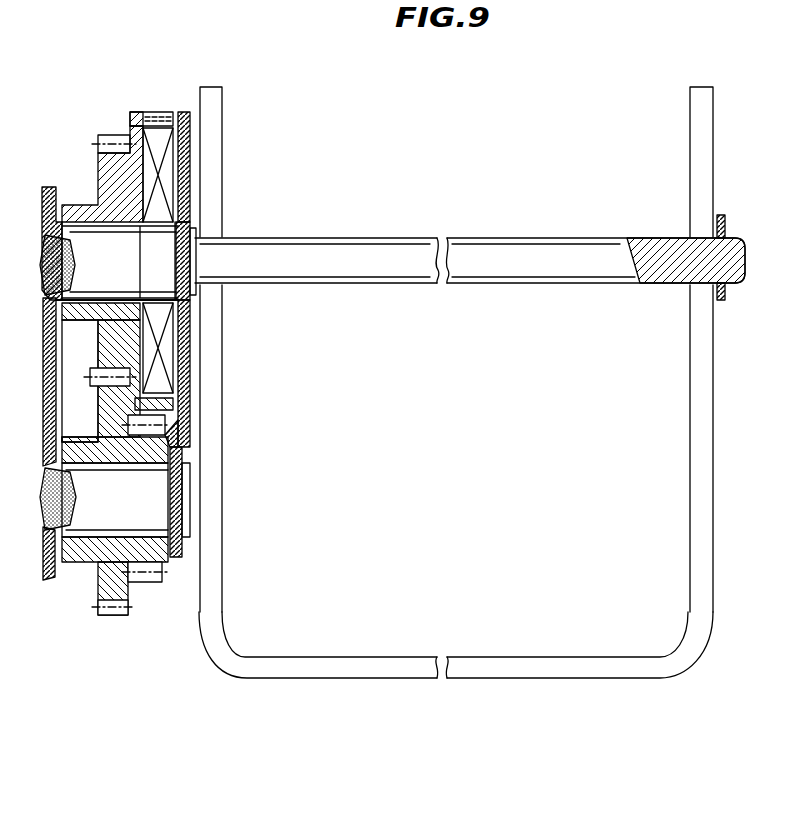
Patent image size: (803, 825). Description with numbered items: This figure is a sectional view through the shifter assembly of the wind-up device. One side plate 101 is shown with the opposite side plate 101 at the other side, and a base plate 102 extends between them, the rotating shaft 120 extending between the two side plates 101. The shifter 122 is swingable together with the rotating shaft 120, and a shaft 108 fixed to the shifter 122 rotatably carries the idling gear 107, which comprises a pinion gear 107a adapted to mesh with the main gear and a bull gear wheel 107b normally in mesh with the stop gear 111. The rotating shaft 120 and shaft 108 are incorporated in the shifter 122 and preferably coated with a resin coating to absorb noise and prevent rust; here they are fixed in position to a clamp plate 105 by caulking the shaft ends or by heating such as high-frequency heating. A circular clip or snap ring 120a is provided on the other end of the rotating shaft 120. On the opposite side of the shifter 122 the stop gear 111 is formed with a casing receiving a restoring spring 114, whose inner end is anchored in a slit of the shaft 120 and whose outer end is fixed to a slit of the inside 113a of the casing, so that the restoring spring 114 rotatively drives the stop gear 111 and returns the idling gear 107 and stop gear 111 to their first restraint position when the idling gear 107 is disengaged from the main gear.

The side plate 101 is at (222, 106).
The base plate 102 is at (485, 678).
The clamp plate 105 is at (47, 357).
The idling gear 107 is at (97, 570).
The pinion gear 107a is at (157, 582).
The bull gear wheel 107b is at (115, 618).
The shaft 108 is at (130, 513).
The stop gear 111 is at (114, 181).
The inside of the casing 113a is at (155, 112).
The restoring spring 114 is at (190, 156).
The rotating shaft 120 is at (362, 208).
The circular clip or snap ring 120a is at (718, 220).
The shifter 122 is at (184, 112).